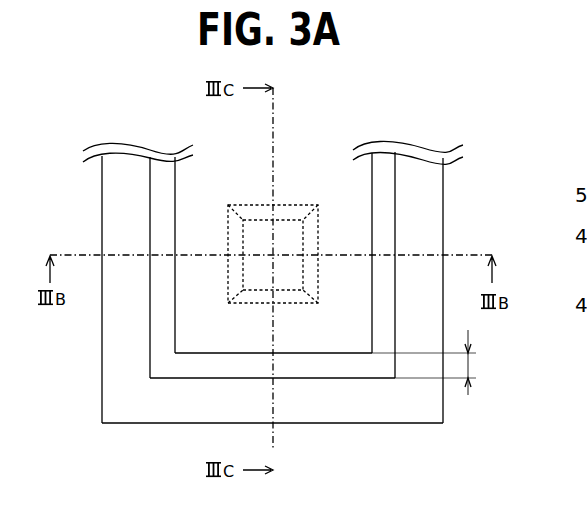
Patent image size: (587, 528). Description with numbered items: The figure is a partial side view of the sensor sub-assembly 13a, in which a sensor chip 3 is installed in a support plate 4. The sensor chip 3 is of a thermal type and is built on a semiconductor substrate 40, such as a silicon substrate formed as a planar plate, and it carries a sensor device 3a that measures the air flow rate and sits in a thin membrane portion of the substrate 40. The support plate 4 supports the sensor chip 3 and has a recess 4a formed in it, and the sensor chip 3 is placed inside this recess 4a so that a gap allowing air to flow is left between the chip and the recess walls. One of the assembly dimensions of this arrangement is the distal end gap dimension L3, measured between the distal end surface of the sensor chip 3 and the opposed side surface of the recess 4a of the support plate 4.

The support plate 4 is at (112, 223).
The recess 4a is at (188, 368).
The sensor sub-assembly 13a is at (391, 437).
The sensor chip 3 is at (348, 225).
The semiconductor substrate 40 is at (365, 242).
The sensor device 3a is at (285, 235).
The distal end gap dimension L3 is at (470, 365).